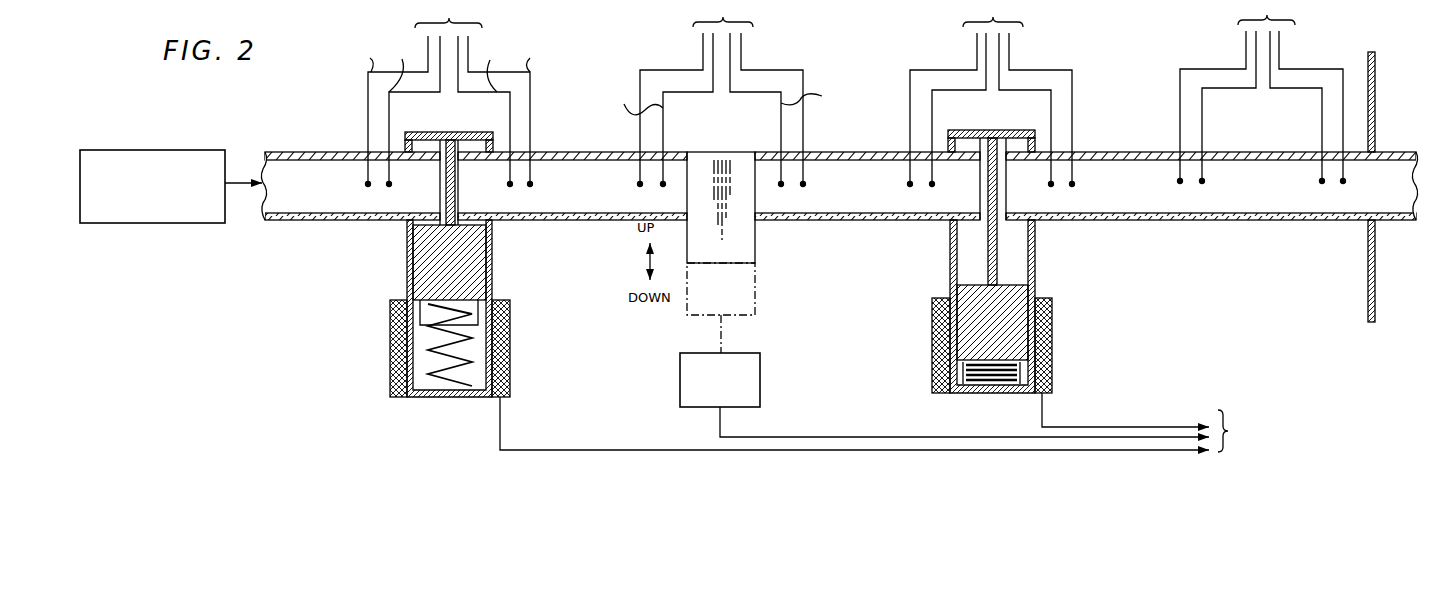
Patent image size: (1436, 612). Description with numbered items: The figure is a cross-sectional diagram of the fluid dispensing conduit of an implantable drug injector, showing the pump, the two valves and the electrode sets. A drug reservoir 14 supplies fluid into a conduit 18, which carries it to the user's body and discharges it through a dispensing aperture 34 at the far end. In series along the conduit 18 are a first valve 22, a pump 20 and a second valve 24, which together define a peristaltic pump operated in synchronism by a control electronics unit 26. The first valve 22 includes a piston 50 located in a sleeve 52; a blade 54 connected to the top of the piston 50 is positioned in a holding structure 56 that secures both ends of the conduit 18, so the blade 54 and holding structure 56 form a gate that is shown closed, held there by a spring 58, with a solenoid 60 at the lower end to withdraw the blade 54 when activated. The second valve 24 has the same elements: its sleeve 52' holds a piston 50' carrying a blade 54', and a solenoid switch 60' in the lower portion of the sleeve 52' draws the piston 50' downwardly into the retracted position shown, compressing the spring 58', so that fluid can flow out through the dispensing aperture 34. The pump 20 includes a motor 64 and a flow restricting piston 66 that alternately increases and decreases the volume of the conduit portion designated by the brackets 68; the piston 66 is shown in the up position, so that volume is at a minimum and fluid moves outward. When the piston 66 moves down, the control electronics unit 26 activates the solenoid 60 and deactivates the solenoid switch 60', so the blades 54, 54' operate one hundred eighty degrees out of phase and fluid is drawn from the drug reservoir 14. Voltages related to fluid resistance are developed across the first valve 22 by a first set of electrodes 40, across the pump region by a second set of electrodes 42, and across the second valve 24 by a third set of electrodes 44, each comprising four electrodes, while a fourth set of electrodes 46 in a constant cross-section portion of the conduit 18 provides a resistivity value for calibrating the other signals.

The drug reservoir 14 is at (172, 224).
The conduit 18 is at (305, 144).
The pump 20 is at (752, 253).
The first valve 22 is at (440, 329).
The second valve 24 is at (988, 285).
The control electronics unit 26 is at (1271, 435).
The dispensing aperture 34 is at (1402, 168).
The first set of electrodes 40 is at (473, 44).
The second set of electrodes 42 is at (747, 48).
The third set of electrodes 44 is at (1015, 48).
The fourth set of electrodes 46 is at (1280, 49).
The piston 50 is at (478, 262).
The sleeve 52 is at (475, 308).
The blade 54 is at (398, 193).
The holding structure 56 is at (447, 135).
The spring 58 is at (449, 369).
The solenoid 60 is at (468, 348).
The motor 64 is at (760, 381).
The piston 66 is at (755, 181).
The conduit portion 68 is at (755, 144).
The piston 50' is at (1028, 322).
The sleeve 52' is at (1023, 306).
The blade 54' is at (1038, 211).
The spring 58' is at (991, 397).
The solenoid switch 60' is at (1016, 345).